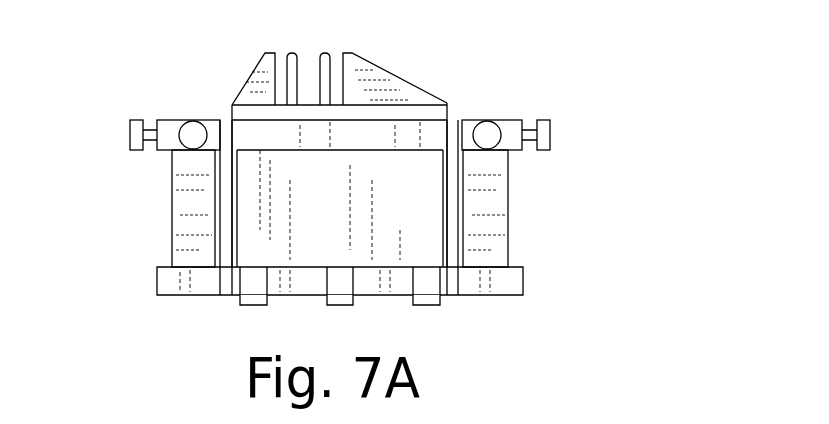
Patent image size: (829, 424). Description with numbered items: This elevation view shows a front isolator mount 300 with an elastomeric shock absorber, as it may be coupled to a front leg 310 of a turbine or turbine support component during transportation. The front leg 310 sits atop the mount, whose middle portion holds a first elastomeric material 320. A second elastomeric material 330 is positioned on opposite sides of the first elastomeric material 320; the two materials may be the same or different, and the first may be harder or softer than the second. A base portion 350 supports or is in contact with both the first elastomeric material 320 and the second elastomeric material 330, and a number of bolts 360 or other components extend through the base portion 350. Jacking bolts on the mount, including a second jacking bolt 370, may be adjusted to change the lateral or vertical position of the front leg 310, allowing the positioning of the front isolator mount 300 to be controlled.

The front isolator mount 300 is at (590, 53).
The front leg 310 is at (407, 83).
The first elastomeric material 320 is at (407, 167).
The second elastomeric material 330 is at (170, 215).
The base portion 350 is at (158, 287).
The bolts 360 is at (372, 304).
The second jacking bolt 370 is at (550, 135).